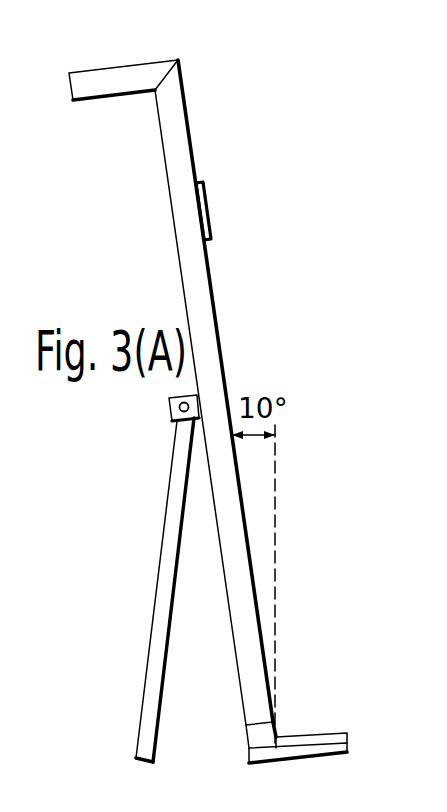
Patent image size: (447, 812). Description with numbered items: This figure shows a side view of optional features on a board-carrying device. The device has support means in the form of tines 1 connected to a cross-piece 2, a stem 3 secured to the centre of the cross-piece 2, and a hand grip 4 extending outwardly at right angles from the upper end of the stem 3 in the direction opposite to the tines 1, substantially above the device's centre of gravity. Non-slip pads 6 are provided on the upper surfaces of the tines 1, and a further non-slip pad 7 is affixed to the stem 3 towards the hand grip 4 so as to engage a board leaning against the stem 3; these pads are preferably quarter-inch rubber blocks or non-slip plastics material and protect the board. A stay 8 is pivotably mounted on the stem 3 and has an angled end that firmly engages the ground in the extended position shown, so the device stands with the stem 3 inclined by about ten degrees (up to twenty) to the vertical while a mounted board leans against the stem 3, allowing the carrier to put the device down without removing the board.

The tines 1 is at (297, 755).
The cross-piece 2 is at (255, 742).
The stem 3 is at (207, 340).
The hand grip 4 is at (127, 78).
The non-slip pads 6 is at (308, 740).
The non-slip pad 7 is at (207, 217).
The stay 8 is at (162, 580).